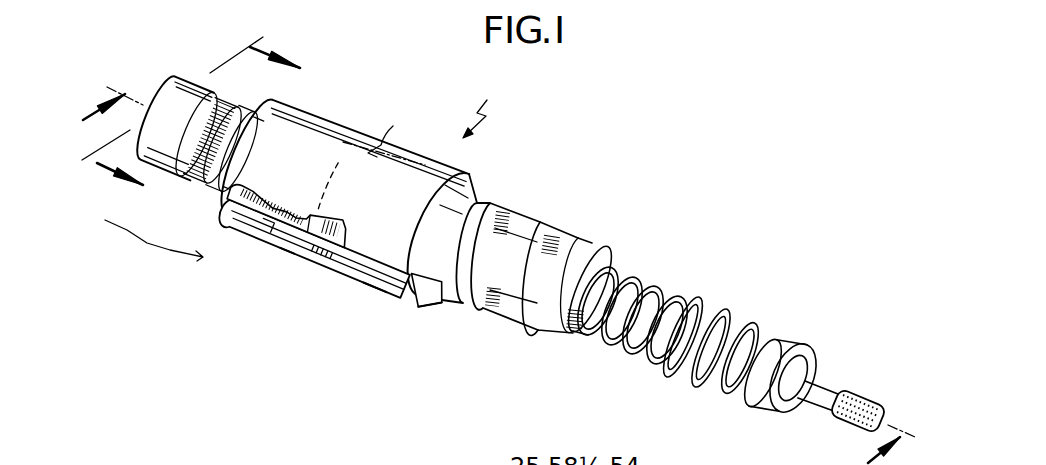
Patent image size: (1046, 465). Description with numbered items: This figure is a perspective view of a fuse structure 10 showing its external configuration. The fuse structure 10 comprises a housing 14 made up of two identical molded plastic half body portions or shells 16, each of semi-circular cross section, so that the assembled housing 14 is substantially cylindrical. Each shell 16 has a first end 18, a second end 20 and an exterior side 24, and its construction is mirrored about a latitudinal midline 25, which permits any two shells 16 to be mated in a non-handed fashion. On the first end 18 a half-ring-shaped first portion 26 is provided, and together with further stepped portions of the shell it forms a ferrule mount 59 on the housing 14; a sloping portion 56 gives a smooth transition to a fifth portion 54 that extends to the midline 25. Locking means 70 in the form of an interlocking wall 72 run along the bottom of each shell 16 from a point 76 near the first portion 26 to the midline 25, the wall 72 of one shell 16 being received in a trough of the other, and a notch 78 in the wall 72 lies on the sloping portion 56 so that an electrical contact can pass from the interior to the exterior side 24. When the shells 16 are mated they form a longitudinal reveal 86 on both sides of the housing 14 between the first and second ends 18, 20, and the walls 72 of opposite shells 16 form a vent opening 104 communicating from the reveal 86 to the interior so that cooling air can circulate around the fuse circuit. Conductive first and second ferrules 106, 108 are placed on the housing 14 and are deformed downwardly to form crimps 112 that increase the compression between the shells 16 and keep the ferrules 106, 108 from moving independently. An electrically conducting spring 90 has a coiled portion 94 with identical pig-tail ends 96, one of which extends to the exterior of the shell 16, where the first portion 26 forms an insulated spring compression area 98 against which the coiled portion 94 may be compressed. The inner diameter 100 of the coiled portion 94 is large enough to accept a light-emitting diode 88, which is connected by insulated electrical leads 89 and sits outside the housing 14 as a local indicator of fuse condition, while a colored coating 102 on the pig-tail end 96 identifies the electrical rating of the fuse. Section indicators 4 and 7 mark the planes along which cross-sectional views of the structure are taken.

The section line 4- 4 is at (499, 260).
The section line 7- 7 is at (191, 112).
The fuse structure 10 is at (483, 106).
The housing 14 is at (409, 317).
The shell 16 is at (343, 116).
The first end 18 is at (171, 76).
The second end 20 is at (543, 335).
The exterior side 24 is at (339, 191).
The latitudinal midline 25 is at (394, 133).
The first portion 26 is at (523, 327).
The fifth portion 54 is at (303, 101).
The sloping portion 56 is at (472, 193).
The ferrule mount 59 is at (154, 249).
The locking means 70 is at (265, 226).
The interlocking wall 72 is at (228, 232).
The point 76 is at (287, 248).
The notch 78 is at (423, 307).
The longitudinal reveal 86 is at (373, 287).
The light-emitting diode 88 is at (710, 390).
The insulated electrical leads 89 is at (651, 292).
The electrically conducting spring 90 is at (770, 424).
The coiled portion 94 is at (747, 328).
The pig-tail end 96 is at (818, 403).
The insulated spring compression area 98 is at (588, 248).
The inner diameter 100 is at (691, 366).
The colored coating 102 is at (860, 392).
The vent opening 104 is at (305, 207).
The first ferrule 106 is at (174, 137).
The second ferrule 108 is at (547, 230).
The crimps 112 is at (186, 183).